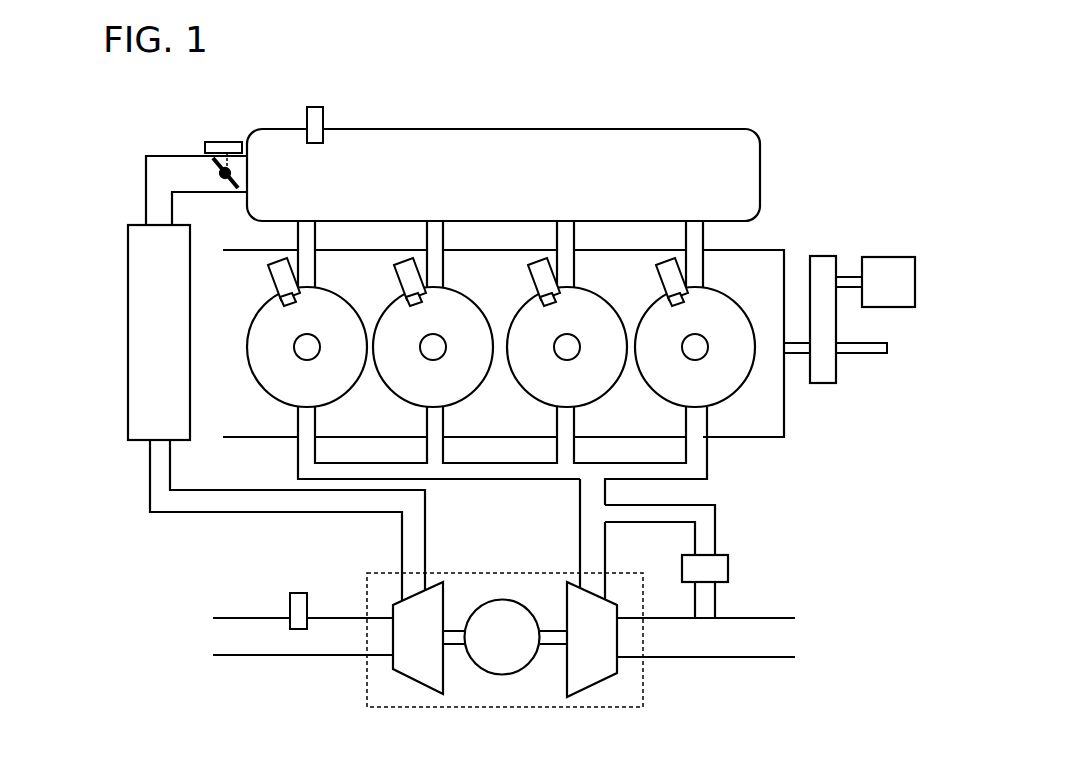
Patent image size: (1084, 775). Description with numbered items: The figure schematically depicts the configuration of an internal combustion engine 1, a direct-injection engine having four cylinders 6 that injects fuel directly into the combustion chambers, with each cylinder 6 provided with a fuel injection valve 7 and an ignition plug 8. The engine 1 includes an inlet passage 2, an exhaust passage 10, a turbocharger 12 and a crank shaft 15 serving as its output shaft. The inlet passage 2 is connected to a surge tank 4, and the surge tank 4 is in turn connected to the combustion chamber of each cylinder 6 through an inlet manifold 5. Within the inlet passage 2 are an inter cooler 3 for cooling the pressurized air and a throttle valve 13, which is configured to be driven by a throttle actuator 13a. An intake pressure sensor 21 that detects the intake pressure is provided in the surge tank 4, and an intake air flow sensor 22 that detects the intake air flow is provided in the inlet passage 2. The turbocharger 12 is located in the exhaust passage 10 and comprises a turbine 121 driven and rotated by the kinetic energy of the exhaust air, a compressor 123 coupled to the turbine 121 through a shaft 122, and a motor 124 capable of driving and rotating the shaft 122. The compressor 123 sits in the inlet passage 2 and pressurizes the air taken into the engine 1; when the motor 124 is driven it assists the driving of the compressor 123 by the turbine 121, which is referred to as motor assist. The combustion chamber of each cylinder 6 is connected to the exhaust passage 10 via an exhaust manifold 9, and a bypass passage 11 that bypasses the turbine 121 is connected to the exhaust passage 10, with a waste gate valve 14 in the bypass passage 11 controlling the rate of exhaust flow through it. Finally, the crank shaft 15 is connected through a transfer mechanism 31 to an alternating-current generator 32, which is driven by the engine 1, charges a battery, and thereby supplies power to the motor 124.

The internal combustion engine 1 is at (776, 122).
The inlet passage 2 is at (222, 514).
The inter cooler 3 is at (127, 312).
The surge tank 4 is at (452, 129).
The inlet manifold 5 is at (297, 238).
The cylinder 6 is at (324, 290).
The fuel injection valve 7 is at (270, 280).
The ignition plug 8 is at (296, 340).
The exhaust manifold 9 is at (297, 456).
The exhaust passage 10 is at (606, 551).
The bypass passage 11 is at (716, 526).
The turbocharger 12 is at (366, 680).
The throttle valve 13 is at (212, 164).
The throttle actuator 13a is at (227, 141).
The waste gate valve 14 is at (729, 563).
The crank shaft 15 is at (857, 355).
The intake pressure sensor 21 is at (306, 112).
The intake air flow sensor 22 is at (289, 601).
The transfer mechanism 31 is at (820, 255).
The alternating-current generator 32 is at (876, 256).
The turbine 121 is at (592, 688).
The shaft 122 is at (451, 630).
The compressor 123 is at (412, 684).
The motor 124 is at (497, 676).